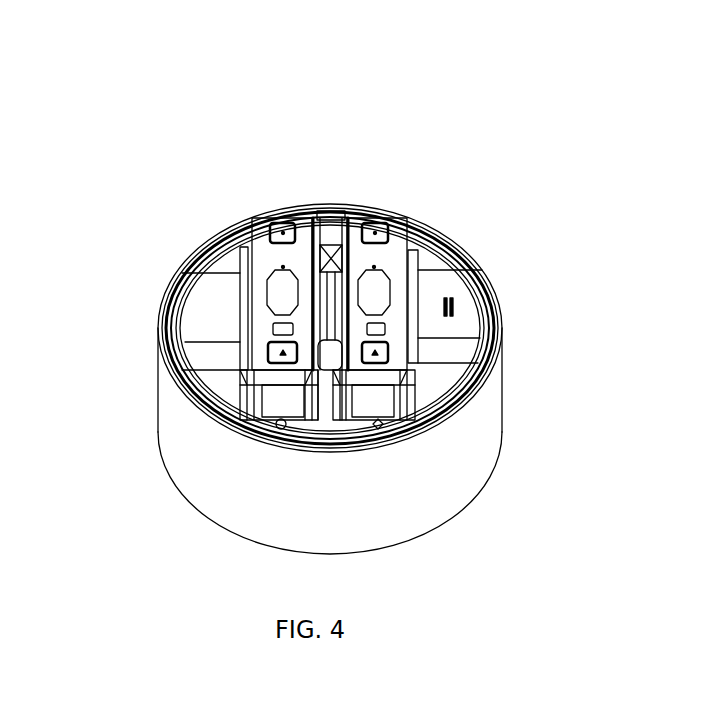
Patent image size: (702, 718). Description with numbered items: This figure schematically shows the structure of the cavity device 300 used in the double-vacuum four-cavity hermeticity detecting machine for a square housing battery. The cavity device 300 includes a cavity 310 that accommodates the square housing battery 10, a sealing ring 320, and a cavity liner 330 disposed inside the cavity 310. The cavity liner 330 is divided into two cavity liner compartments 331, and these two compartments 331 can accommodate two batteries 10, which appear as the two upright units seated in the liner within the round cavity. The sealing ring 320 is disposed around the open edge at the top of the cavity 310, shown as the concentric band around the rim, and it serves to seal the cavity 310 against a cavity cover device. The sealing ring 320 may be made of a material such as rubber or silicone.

The cavity device 300 is at (340, 37).
The cavity 310 is at (177, 420).
The sealing ring 320 is at (484, 379).
The cavity liner 330 is at (190, 300).
The cavity liner compartment 331 is at (330, 260).
The square housing battery 10 is at (400, 230).